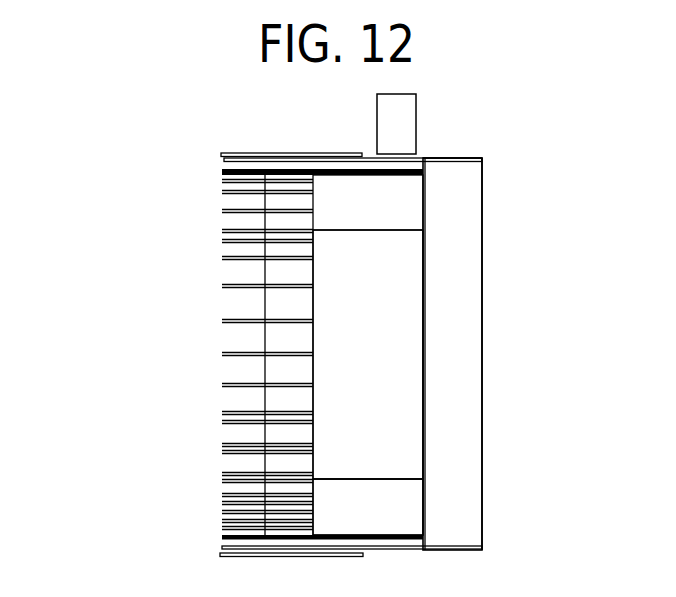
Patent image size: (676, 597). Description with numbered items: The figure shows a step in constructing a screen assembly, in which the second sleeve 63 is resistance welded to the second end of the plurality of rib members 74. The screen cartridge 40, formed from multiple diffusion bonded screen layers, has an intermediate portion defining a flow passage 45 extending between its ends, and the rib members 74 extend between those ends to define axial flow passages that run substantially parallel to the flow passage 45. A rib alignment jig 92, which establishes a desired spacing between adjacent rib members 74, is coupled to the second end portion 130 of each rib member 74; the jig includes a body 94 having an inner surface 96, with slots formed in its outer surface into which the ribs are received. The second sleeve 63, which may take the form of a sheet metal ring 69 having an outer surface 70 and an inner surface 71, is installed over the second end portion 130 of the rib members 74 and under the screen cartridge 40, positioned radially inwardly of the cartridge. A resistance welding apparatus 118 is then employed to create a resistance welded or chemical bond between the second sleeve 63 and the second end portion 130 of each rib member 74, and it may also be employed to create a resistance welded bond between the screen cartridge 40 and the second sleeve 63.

The screen cartridge 40 is at (232, 150).
The resistance welding apparatus 118 is at (367, 113).
The outer surface 70 is at (448, 158).
The sheet metal ring 69 is at (485, 199).
The rib alignment jig 92 is at (438, 216).
The inner surface 71 is at (462, 257).
The inner surface 96 is at (381, 313).
The flow passage 45 is at (340, 393).
The second sleeve 63 is at (503, 481).
The body 94 is at (427, 507).
The second end portion 130 is at (385, 546).
The rib members 74 is at (242, 227).